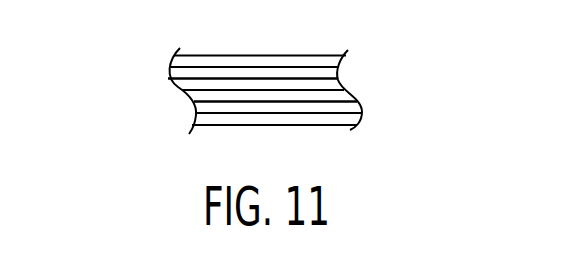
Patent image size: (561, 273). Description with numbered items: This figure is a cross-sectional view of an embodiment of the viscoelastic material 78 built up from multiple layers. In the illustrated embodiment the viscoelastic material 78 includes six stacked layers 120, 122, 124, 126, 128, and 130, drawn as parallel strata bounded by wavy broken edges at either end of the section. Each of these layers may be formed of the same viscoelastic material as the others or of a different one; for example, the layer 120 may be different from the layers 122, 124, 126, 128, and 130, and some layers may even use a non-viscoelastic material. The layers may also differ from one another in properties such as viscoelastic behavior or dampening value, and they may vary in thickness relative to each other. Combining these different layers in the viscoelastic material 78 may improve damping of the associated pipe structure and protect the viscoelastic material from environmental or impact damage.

The viscoelastic material 78 is at (256, 125).
The layer 120 is at (178, 63).
The layer 122 is at (178, 74).
The layer 124 is at (185, 88).
The layer 126 is at (196, 101).
The layer 128 is at (198, 112).
The layer 130 is at (194, 123).